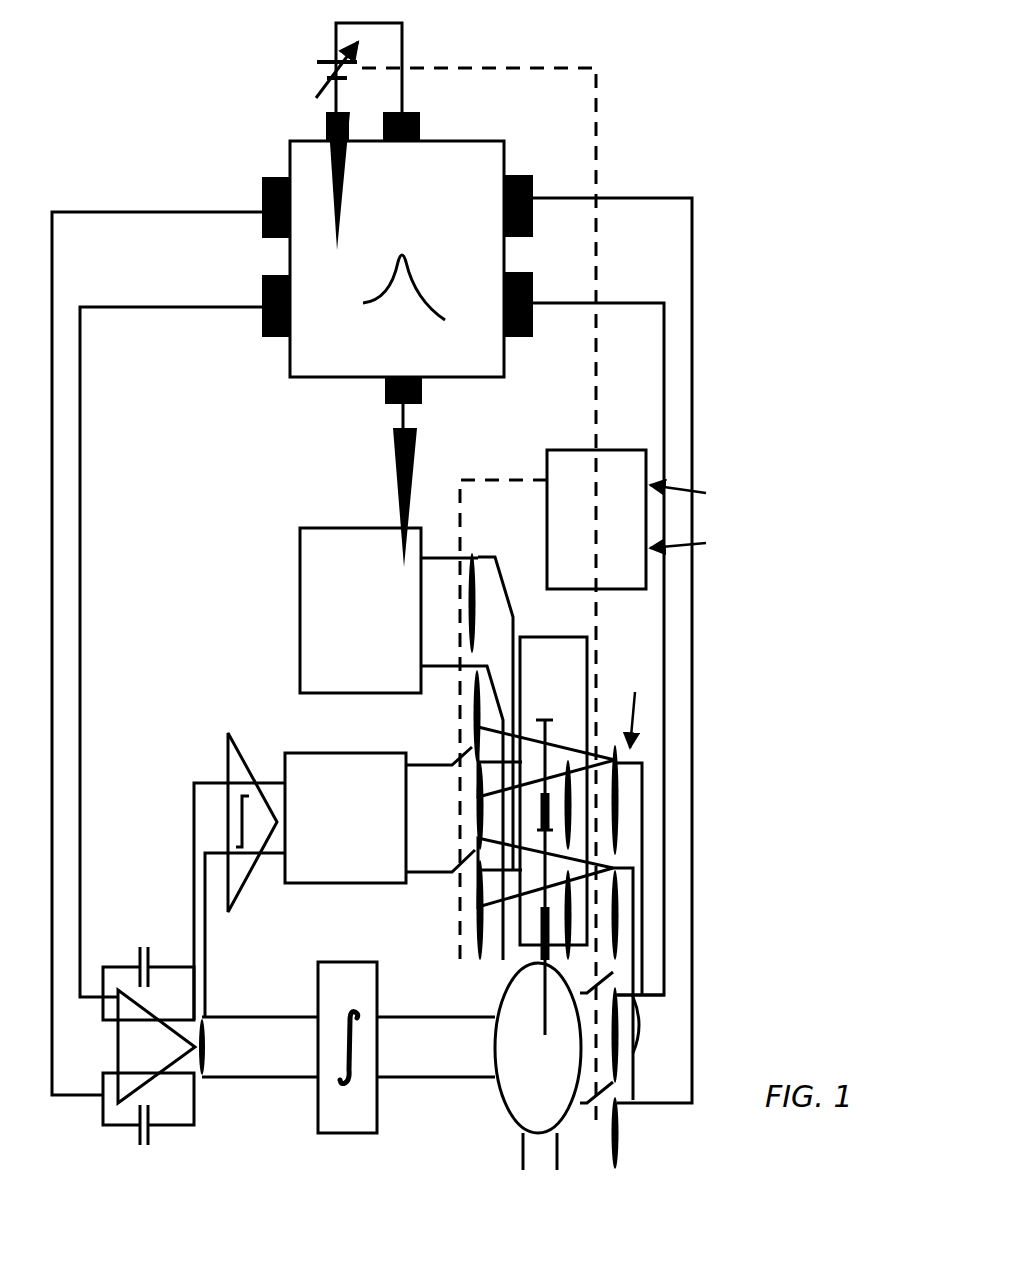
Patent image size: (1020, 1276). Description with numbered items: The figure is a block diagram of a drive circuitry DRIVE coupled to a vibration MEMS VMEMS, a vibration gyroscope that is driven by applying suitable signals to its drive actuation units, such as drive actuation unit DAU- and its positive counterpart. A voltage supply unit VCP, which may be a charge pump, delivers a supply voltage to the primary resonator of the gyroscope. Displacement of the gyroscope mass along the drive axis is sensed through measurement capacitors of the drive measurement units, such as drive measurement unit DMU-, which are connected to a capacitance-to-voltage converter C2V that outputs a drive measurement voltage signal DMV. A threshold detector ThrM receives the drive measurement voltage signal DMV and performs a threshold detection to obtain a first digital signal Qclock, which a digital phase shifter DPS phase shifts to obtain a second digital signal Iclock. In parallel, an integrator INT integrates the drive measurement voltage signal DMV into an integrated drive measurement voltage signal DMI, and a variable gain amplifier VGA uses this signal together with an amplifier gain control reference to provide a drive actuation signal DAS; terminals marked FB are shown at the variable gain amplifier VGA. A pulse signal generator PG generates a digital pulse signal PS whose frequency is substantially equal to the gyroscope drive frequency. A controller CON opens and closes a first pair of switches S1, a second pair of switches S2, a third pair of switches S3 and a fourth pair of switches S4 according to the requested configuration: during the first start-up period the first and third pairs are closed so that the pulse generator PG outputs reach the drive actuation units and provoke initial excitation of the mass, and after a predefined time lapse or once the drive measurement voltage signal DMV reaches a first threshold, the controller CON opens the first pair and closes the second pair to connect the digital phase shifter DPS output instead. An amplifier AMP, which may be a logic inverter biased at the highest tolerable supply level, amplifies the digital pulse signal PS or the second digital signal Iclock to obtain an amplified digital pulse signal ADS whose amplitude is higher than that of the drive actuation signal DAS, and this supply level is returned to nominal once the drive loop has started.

The vibration MEMS VMEMS is at (446, 209).
The voltage supply unit VCP is at (339, 67).
The drive measurement unit DMU- is at (175, 652).
The drive actuation unit DAU- is at (598, 649).
The digital pulse signal PS is at (436, 540).
The controller CON is at (625, 535).
The drive measurement voltage signal DMV is at (486, 803).
The pulse signal generator PG is at (382, 626).
The first pair of controllable switches S1 is at (491, 756).
The digital phase shifter DPS is at (376, 840).
The second pair of controllable switches S2 is at (494, 861).
The amplifier AMP is at (586, 674).
The third pair of controllable switches S3 is at (634, 870).
The amplified digital pulse signal ADS is at (641, 699).
The variable gain amplifier VGA is at (546, 1029).
The fourth pair of controllable switches S4 is at (610, 1070).
The feedback input FB is at (540, 1166).
The drive actuation signal DAS is at (586, 1124).
The integrator INT is at (298, 1003).
The integrated drive measurement voltage signal DMI is at (436, 1047).
The capacitance-to-voltage converter C2V is at (154, 1014).
The threshold detector ThrM is at (210, 778).
The first digital signal Qclock is at (271, 768).
The second digital signal Iclock is at (423, 882).
The drive circuitry DRIVE is at (728, 712).